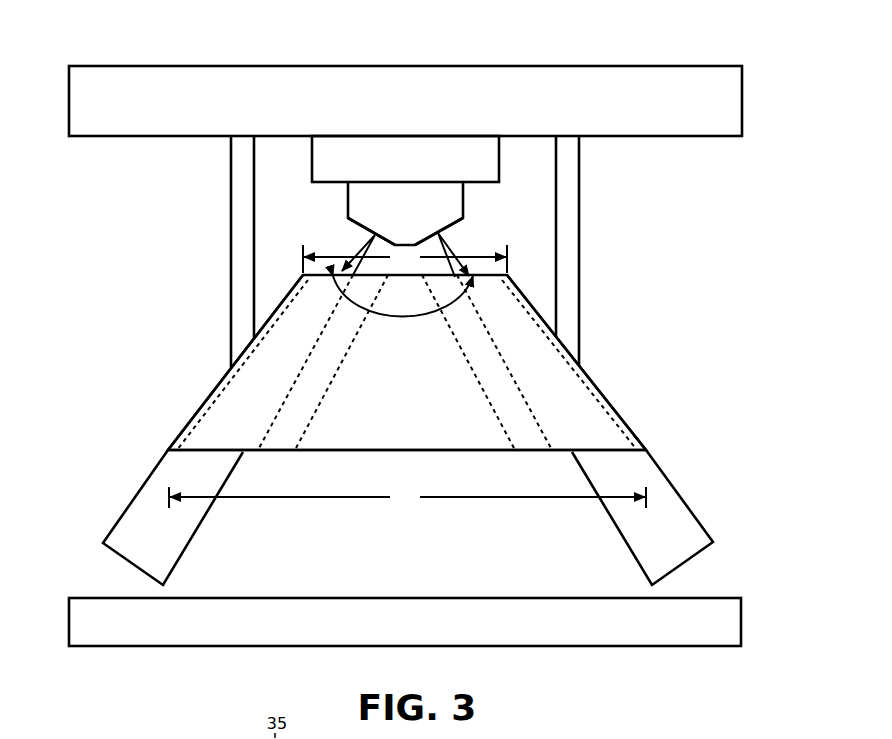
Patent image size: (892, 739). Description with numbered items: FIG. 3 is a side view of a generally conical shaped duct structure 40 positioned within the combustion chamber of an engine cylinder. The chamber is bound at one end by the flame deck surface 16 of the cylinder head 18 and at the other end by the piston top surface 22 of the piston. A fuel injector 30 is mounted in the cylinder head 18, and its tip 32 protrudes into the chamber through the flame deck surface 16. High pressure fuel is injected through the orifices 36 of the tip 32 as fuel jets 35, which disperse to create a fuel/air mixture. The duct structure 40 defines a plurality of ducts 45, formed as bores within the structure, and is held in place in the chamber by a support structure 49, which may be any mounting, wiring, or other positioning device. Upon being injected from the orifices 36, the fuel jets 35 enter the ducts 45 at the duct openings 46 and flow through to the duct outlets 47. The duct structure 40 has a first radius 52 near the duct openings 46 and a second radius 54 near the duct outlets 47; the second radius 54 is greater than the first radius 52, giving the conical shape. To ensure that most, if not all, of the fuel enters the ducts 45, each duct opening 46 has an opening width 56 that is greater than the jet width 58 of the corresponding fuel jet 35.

The flame deck surface 16 is at (622, 137).
The cylinder head 18 is at (525, 106).
The piston top surface 22 is at (405, 603).
The fuel injector 30 is at (425, 145).
The tip 32 is at (390, 220).
The fuel jets 35 is at (153, 538).
The orifices 36 is at (377, 236).
The duct structure 40 is at (223, 378).
The ducts 45 is at (318, 312).
The duct openings 46 is at (403, 301).
The duct outlets 47 is at (238, 452).
The support structure 49 is at (231, 214).
The first radius 52 is at (405, 259).
The second radius 54 is at (407, 497).
The opening width 56 is at (496, 279).
The jet width 58 is at (343, 273).